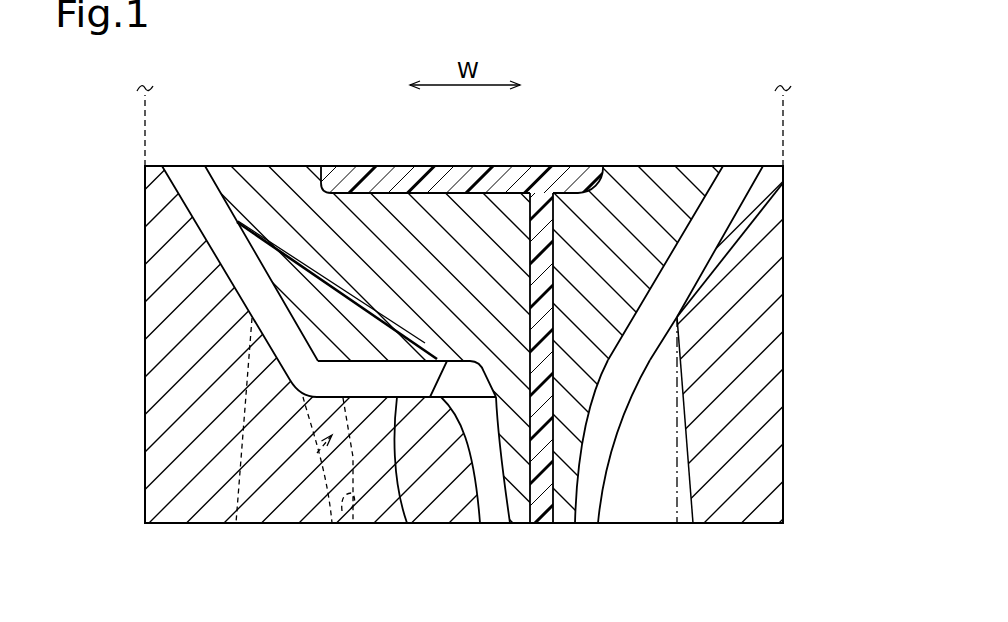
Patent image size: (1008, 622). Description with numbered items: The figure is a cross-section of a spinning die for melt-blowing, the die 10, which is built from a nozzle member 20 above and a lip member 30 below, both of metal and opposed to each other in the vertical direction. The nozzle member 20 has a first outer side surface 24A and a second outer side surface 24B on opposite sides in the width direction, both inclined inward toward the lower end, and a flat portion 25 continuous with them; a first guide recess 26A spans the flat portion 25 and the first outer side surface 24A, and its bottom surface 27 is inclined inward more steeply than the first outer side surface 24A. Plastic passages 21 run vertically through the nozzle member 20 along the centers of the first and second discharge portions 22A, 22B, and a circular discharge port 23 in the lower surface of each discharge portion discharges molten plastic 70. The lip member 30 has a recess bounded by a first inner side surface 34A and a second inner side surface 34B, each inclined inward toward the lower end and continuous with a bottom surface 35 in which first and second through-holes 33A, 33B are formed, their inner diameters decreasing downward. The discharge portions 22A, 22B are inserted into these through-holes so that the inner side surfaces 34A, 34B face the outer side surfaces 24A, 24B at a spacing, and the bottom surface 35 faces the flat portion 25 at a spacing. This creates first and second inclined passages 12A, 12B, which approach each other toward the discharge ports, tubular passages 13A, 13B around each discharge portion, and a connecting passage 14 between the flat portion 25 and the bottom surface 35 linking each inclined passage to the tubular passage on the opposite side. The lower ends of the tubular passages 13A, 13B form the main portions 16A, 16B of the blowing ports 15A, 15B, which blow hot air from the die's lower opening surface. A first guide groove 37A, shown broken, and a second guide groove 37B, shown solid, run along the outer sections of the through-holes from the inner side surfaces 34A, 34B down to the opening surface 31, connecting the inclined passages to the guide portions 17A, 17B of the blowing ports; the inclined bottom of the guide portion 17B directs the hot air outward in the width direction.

The die 10 is at (843, 92).
The nozzle member 20 is at (704, 157).
The lip member 30 is at (796, 210).
The molten plastic 70 is at (498, 172).
The plastic passage 21 is at (543, 200).
The discharge port 23 is at (538, 524).
The first discharge portion 22A is at (372, 517).
The second discharge portion 22B is at (565, 524).
The bottom surface of the first guide recess 27 is at (330, 289).
The first inclined passage 12A is at (236, 278).
The second inclined passage 12B is at (690, 283).
The first outer side surface 24A is at (222, 206).
The second outer side surface 24B is at (700, 213).
The first inner side surface 34A is at (222, 246).
The second inner side surface 34B is at (712, 270).
The first guide recess 26A is at (310, 307).
The connecting passage 14 is at (336, 377).
The flat portion 25 is at (387, 367).
The bottom surface 35 is at (406, 523).
The first through-hole 33A is at (436, 523).
The second through-hole 33B is at (480, 512).
The tubular passage 13A is at (252, 523).
The tubular passage 13B is at (610, 444).
The main portion 16A is at (333, 523).
The main portion 16B is at (587, 525).
The guide portion 17A is at (236, 523).
The guide portion 17B is at (658, 525).
The blowing port 15A is at (355, 584).
The blowing port 15B is at (679, 582).
The first guide groove 37A is at (233, 470).
The second guide groove 37B is at (672, 460).
The opening surface 31 is at (170, 524).